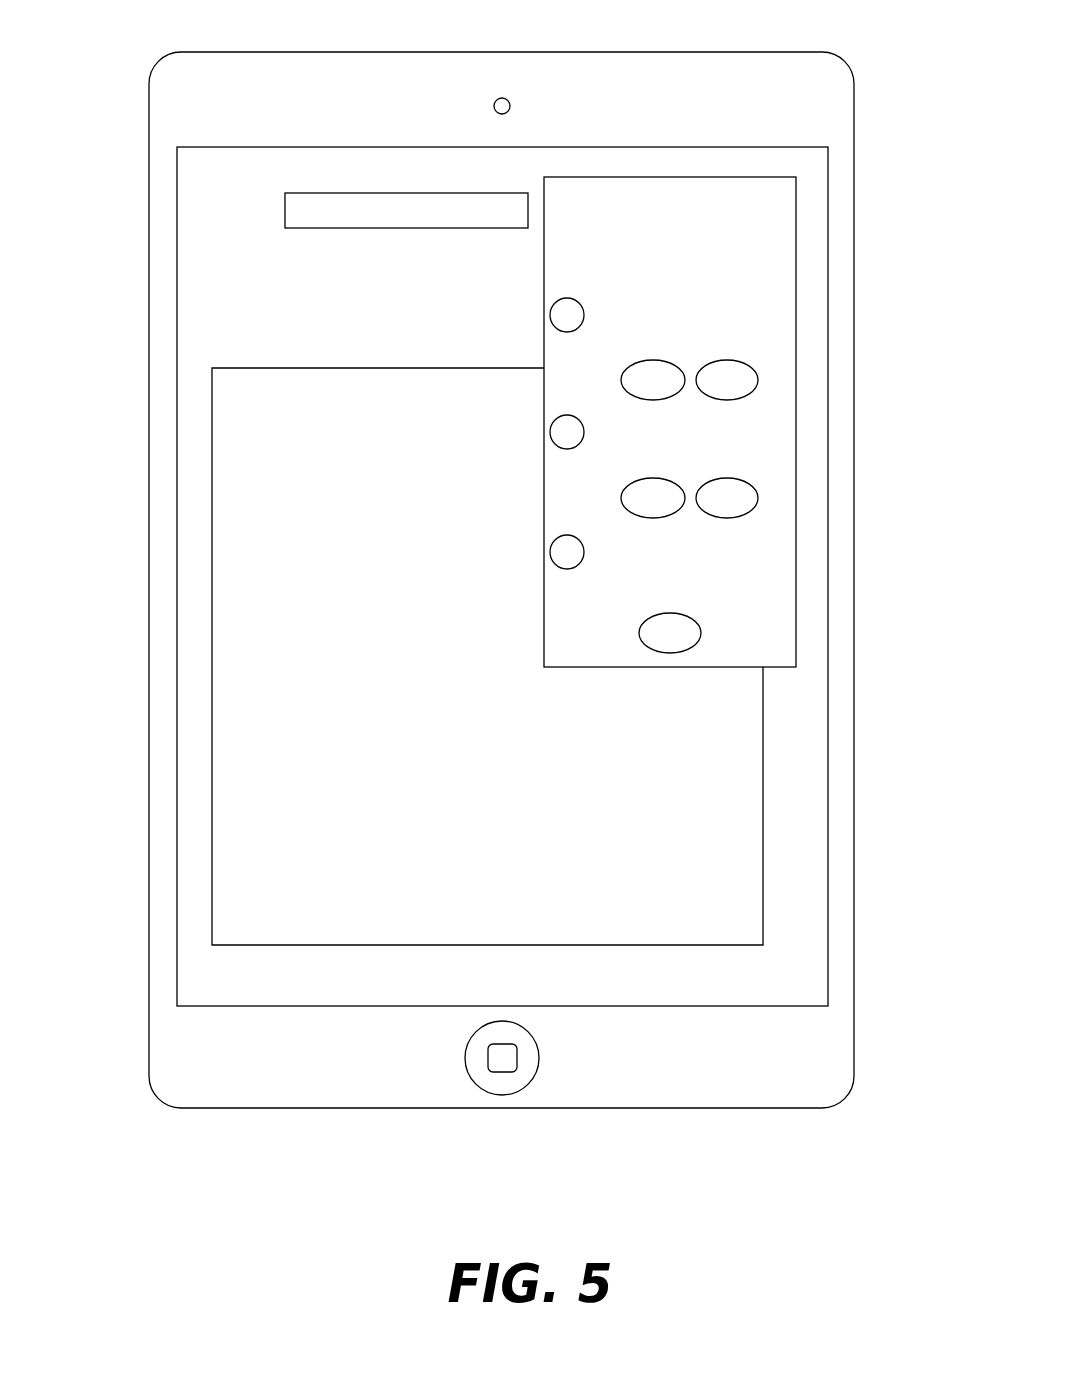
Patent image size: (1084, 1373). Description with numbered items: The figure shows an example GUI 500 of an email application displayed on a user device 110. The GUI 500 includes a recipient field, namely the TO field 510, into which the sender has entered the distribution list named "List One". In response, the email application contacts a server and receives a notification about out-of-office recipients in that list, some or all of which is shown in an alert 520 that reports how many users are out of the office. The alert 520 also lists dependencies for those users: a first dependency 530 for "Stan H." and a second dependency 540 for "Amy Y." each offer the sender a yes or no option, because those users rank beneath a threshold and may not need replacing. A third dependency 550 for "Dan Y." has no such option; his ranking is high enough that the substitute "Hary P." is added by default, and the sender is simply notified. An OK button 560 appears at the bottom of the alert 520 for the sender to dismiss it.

The user device 110 is at (855, 113).
The GUI 500 is at (296, 592).
The TO field 510 is at (357, 193).
The alert 520 is at (796, 270).
The first dependency 530 is at (551, 316).
The second dependency 540 is at (551, 433).
The third dependency 550 is at (551, 553).
The OK button 560 is at (644, 650).